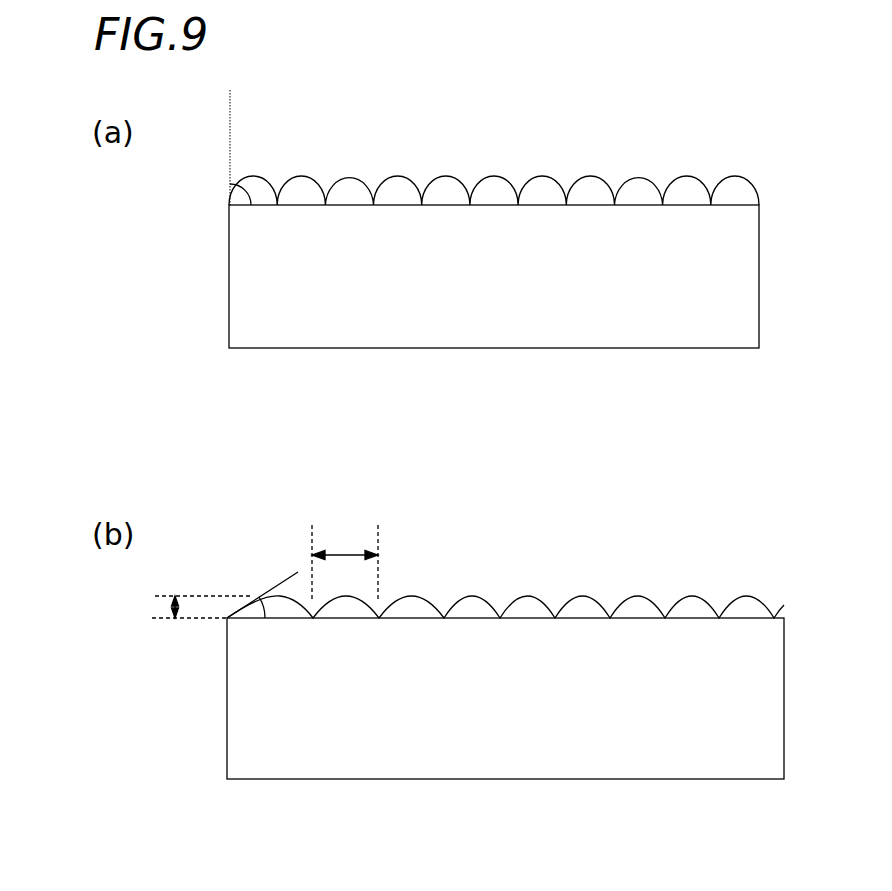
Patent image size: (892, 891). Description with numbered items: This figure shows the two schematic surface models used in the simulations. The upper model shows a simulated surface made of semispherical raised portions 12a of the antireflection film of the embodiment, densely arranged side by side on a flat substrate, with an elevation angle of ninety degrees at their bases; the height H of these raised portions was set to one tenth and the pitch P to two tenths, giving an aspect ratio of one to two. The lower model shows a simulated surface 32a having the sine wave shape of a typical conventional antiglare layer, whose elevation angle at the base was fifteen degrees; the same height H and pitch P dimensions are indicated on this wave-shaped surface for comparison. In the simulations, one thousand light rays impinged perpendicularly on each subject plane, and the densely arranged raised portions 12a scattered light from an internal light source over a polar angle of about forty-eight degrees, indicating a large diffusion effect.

The raised portions 12a is at (533, 166).
The lens surface with curved protrusions of pitch P and height H 32a is at (572, 586).
The pitch P is at (345, 550).
The height H is at (185, 606).